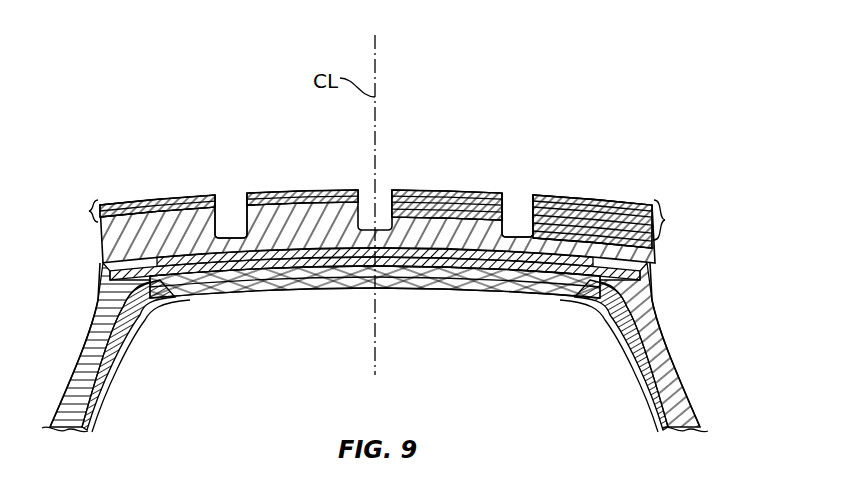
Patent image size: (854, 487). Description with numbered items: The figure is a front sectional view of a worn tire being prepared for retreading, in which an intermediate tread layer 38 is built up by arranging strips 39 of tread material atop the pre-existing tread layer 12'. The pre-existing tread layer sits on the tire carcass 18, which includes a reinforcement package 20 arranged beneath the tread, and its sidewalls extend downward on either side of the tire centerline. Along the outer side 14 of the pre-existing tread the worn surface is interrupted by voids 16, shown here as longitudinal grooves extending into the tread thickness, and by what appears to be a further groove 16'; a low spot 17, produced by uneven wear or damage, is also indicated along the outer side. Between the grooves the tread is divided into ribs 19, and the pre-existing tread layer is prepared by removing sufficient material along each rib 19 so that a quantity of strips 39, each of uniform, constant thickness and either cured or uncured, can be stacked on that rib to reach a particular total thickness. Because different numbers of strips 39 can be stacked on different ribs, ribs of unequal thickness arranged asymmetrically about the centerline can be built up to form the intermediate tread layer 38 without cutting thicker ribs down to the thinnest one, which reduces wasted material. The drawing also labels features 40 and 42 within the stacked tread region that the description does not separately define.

The tire 12' is at (88, 342).
The outer side of the pre-existing tread layer 14 is at (173, 210).
The voids 16 is at (512, 187).
The groove 16' is at (238, 188).
The low spot 17 is at (424, 212).
The tire carcass 18 is at (684, 390).
The rib 19 is at (320, 233).
The reinforcement package 20 is at (630, 283).
The intermediate tread layer 38 is at (90, 210).
The strips of tread material 39 is at (150, 203).
The inner cap layer 40 is at (263, 192).
The cap ply 42 is at (293, 207).